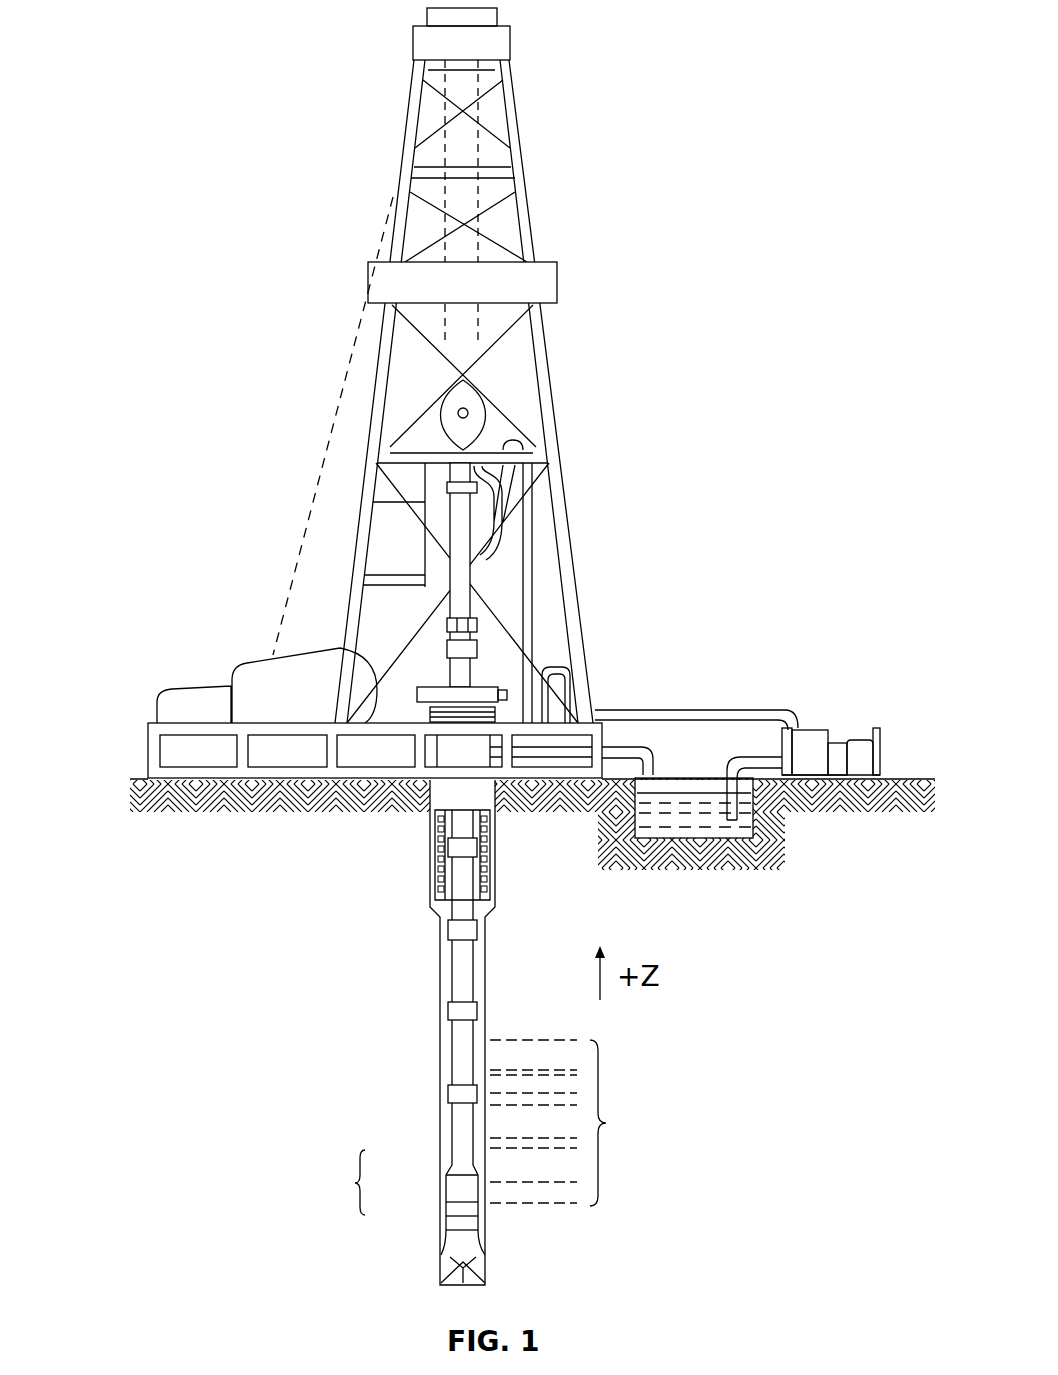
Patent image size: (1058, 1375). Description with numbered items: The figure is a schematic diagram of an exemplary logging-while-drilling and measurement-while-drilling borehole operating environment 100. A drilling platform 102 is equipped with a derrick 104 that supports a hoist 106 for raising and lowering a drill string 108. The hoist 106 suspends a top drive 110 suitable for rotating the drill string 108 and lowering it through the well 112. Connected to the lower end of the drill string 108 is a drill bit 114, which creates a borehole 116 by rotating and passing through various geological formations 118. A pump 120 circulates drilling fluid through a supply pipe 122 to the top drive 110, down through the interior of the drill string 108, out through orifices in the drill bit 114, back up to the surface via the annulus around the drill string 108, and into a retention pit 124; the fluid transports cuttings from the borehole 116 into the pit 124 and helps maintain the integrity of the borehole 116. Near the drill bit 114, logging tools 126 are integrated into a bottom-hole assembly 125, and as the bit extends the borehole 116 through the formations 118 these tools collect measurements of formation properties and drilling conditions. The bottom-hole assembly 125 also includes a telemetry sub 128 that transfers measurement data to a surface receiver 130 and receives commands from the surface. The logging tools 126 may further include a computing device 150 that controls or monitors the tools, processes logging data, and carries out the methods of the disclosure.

The borehole operating environment 100 is at (314, 72).
The drilling platform 102 is at (148, 752).
The derrick 104 is at (527, 210).
The hoist 106 is at (482, 428).
The drill string 108 is at (472, 953).
The top drive 110 is at (466, 527).
The well 112 is at (487, 680).
The drill bit 114 is at (476, 1265).
The borehole 116 is at (485, 998).
The geological formations 118 is at (573, 1123).
The pump 120 is at (810, 738).
The supply pipe 122 is at (685, 710).
The retention pit 124 is at (688, 835).
The bottom-hole assembly 125 is at (395, 1204).
The logging tools 126 is at (453, 1213).
The telemetry sub 128 is at (453, 1185).
The surface receiver 130 is at (460, 592).
The computing device 150 is at (457, 1223).